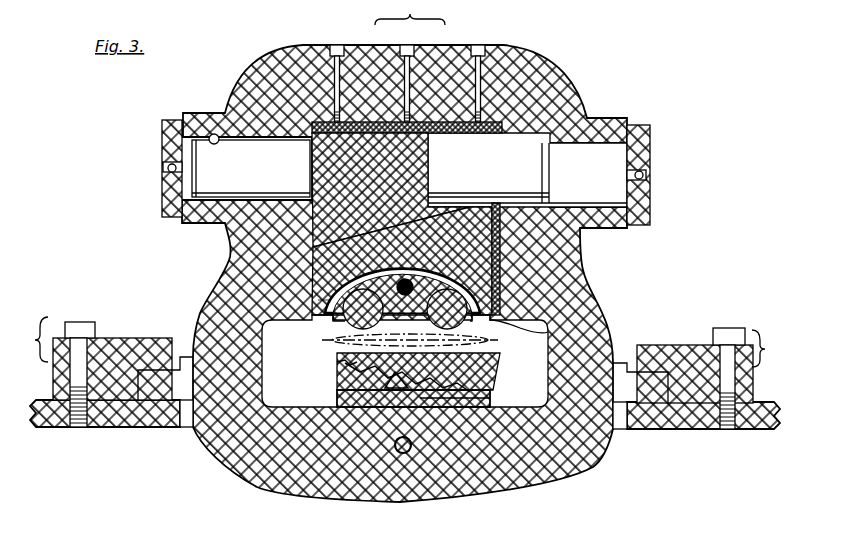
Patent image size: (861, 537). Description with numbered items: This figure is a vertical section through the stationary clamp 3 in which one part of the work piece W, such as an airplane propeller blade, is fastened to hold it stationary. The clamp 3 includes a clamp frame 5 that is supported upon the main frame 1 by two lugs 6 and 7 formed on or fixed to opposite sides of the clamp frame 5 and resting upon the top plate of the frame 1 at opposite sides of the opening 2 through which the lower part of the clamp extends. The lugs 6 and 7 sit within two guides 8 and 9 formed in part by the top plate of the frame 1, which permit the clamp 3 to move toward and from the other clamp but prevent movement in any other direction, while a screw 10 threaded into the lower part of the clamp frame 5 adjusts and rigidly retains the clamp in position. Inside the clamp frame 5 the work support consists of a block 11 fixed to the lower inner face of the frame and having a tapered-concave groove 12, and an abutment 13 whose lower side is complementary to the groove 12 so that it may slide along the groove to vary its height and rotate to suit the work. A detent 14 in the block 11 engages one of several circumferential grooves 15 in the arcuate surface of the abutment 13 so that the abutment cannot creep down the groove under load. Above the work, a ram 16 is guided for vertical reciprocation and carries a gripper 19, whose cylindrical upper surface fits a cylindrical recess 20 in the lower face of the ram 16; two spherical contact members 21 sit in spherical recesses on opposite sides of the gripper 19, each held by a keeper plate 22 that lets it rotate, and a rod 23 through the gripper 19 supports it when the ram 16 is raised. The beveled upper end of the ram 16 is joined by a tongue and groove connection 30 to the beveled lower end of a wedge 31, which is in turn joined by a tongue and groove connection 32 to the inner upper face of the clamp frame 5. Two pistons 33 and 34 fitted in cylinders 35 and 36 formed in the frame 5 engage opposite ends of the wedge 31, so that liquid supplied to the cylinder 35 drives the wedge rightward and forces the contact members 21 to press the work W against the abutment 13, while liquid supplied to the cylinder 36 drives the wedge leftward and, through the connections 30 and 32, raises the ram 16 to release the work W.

The frame 1 is at (133, 416).
The opening 2 is at (189, 417).
The clamp 3 is at (410, 12).
The clamp frame 5 is at (242, 245).
The lug 6 is at (182, 360).
The lug 7 is at (628, 362).
The guide 8 is at (95, 372).
The guide 9 is at (708, 378).
The screw 10 is at (395, 448).
The block 11 is at (492, 398).
The tapered-concave groove 12 is at (337, 358).
The abutment 13 is at (497, 375).
The detent 14 is at (337, 399).
The circumferential grooves 15 is at (337, 380).
The ram 16 is at (406, 259).
The gripper 19 is at (497, 326).
The cylindrical recess 20 is at (427, 262).
The spherical contact members 21 is at (405, 304).
The keeper plate 22 is at (333, 322).
The rod 23 is at (360, 266).
The tongue and groove connection 30 is at (390, 225).
The wedge 31 is at (326, 160).
The tongue and groove connection 32 is at (447, 134).
The piston 33 is at (182, 184).
The piston 34 is at (535, 160).
The cylinder 35 is at (214, 134).
The cylinder 36 is at (615, 153).
The work piece W is at (330, 343).